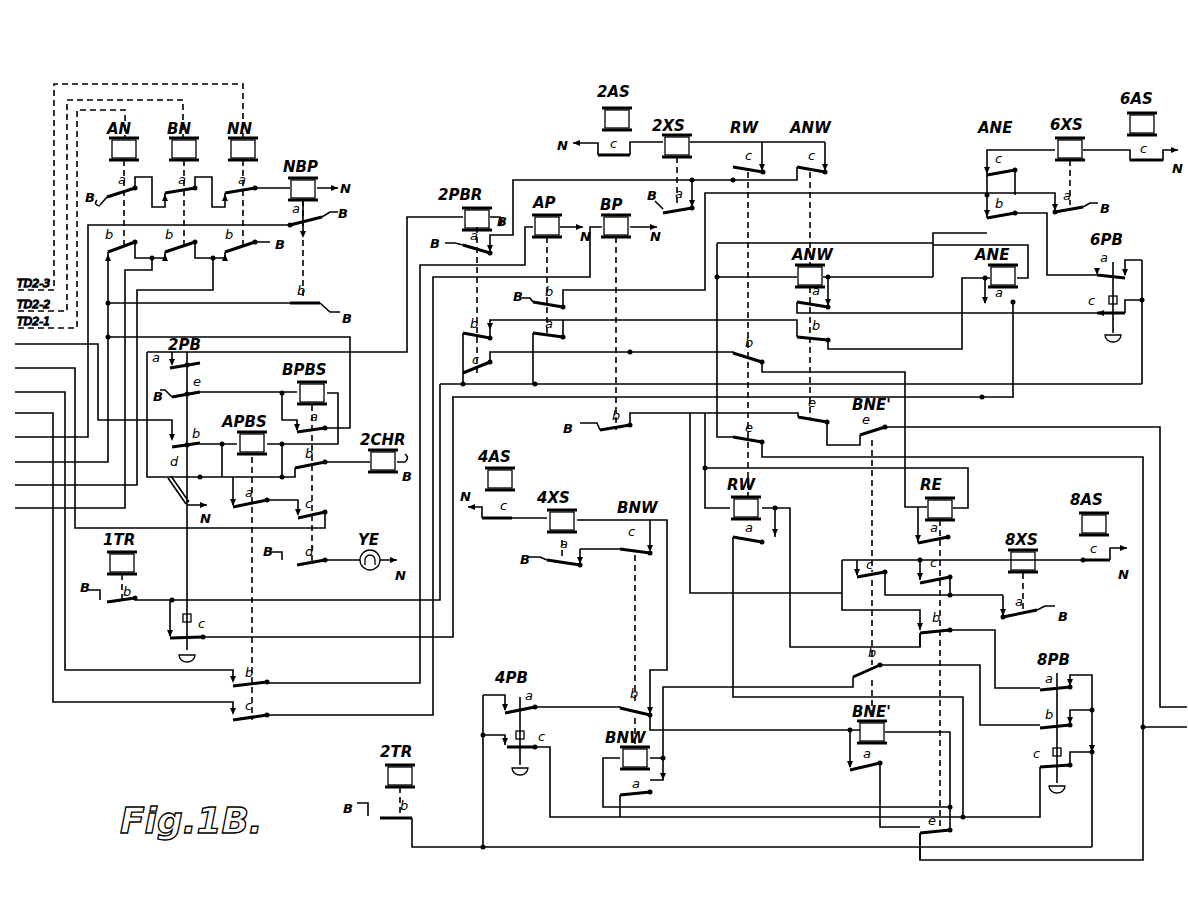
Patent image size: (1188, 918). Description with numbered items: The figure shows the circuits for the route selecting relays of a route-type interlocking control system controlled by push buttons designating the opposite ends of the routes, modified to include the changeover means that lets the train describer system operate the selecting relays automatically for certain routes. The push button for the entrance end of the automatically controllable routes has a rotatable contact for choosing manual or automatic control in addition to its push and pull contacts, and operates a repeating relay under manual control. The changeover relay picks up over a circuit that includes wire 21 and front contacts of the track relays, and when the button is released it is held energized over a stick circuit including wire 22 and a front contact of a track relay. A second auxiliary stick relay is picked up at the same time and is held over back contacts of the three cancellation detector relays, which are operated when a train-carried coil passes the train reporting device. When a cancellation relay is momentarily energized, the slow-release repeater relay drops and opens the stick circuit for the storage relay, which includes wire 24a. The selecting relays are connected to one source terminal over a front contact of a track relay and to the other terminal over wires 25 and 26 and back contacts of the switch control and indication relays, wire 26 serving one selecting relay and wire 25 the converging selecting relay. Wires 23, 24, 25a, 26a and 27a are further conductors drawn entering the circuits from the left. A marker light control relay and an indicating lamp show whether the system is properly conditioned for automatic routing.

The wire 21 is at (95, 385).
The wire 22 is at (170, 440).
The conductor 23 is at (125, 530).
The conductor 24 is at (125, 557).
The wire 24a is at (152, 331).
The conductor 25a is at (63, 357).
The conductor 26a is at (114, 371).
The conductor 27a is at (83, 383).
The wire 25 is at (1036, 567).
The wire 26 is at (974, 651).